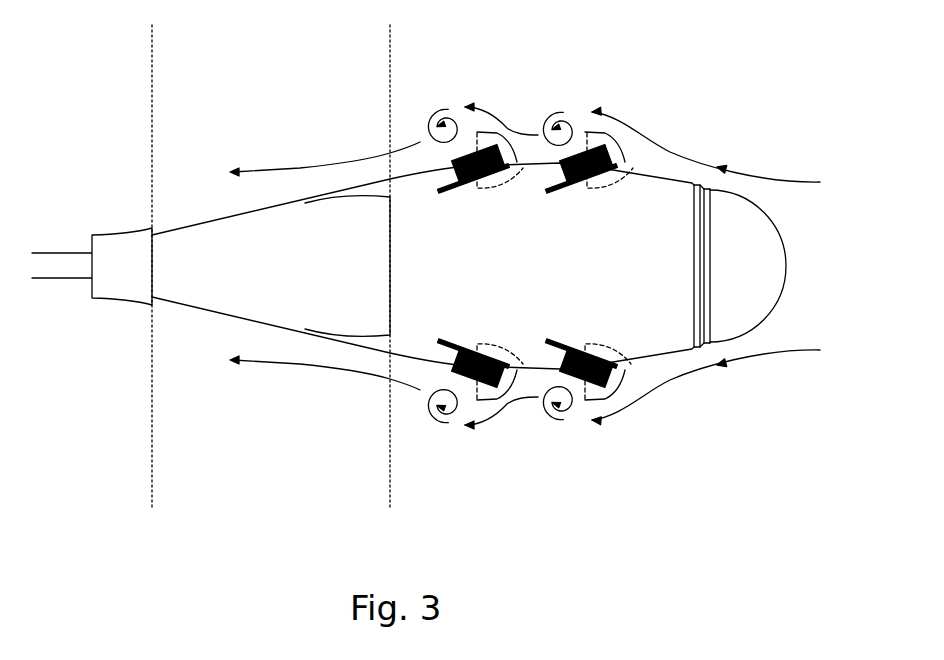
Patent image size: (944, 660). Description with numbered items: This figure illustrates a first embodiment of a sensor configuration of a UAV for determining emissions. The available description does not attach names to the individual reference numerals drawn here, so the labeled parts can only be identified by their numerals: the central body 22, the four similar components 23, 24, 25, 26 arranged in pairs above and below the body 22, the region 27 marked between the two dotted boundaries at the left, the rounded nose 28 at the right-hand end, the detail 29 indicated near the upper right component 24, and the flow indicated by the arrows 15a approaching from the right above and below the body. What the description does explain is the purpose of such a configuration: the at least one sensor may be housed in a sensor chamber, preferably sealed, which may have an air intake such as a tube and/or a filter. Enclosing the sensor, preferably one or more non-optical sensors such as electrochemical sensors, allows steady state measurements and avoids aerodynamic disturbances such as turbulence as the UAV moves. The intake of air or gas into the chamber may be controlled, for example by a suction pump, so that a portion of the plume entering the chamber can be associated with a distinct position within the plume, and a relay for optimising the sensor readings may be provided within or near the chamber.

The fluid flow 15a is at (732, 266).
The body 22 is at (431, 266).
The first flap 23 is at (475, 166).
The second flap 24 is at (584, 168).
The third flap 25 is at (475, 364).
The fourth flap 26 is at (587, 363).
The nozzle section 27 is at (271, 266).
The rounded nose 28 is at (740, 266).
The flow separation region 29 is at (618, 192).